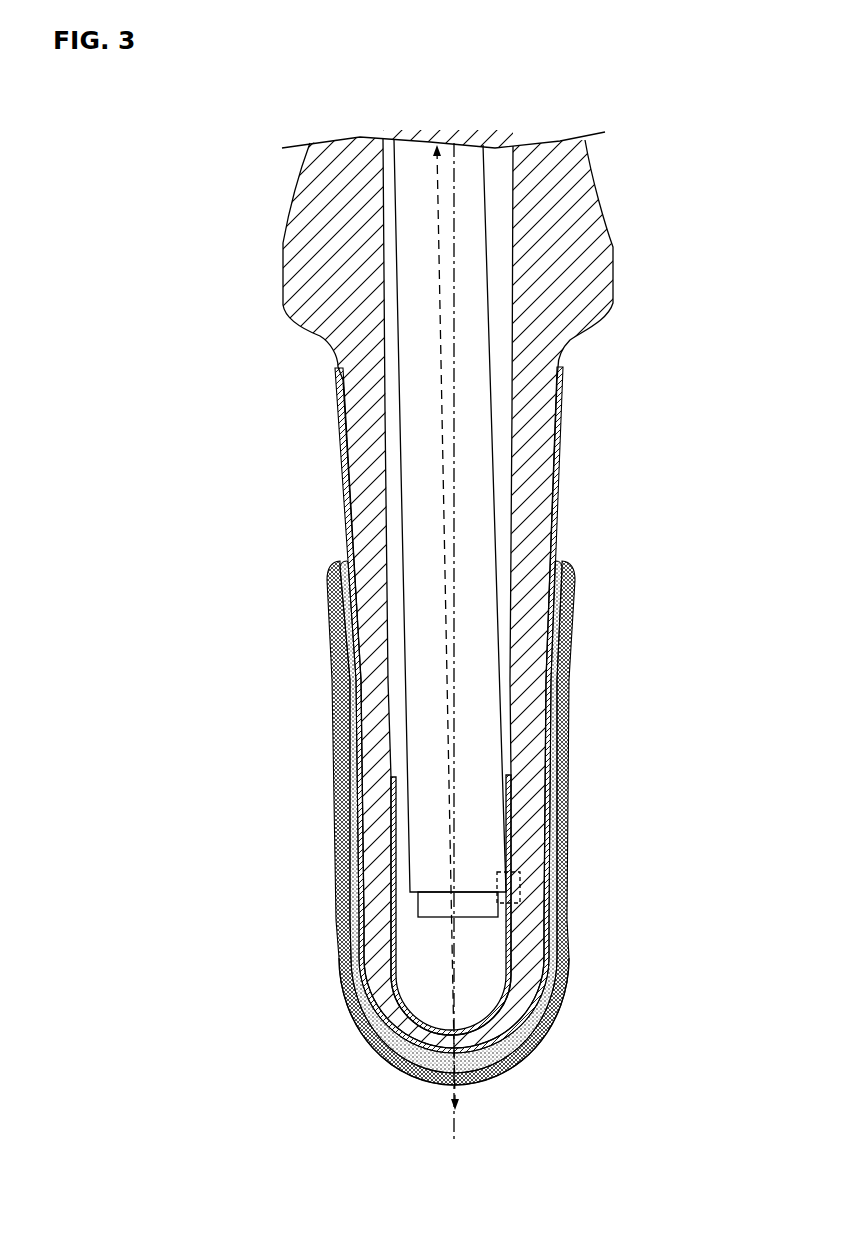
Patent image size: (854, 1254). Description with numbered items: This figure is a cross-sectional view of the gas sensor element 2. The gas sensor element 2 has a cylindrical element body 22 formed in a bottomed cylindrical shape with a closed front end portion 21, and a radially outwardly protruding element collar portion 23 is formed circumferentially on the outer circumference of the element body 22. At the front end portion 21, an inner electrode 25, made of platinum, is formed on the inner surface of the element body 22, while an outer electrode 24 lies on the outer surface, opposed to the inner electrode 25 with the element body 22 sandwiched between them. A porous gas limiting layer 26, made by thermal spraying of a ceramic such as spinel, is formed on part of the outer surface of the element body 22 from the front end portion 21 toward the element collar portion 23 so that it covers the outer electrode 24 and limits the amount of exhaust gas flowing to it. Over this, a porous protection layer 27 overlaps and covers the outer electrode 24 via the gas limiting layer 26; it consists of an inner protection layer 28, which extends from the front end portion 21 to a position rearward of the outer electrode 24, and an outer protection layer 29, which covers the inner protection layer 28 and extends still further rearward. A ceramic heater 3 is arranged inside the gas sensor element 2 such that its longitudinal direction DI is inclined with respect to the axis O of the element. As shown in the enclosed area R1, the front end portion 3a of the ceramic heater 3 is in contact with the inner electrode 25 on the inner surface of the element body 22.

The gas sensor element 2 is at (240, 181).
The element body 22 is at (570, 177).
The element collar portion 23 is at (320, 272).
The outer electrode 24 is at (545, 913).
The inner electrode 25 is at (510, 840).
The gas limiting layer 26 is at (558, 467).
The porous protection layer 27 is at (712, 653).
The inner protection layer 28 is at (554, 768).
The outer protection layer 29 is at (566, 673).
The front end portion 21 is at (420, 1080).
The ceramic heater 3 is at (465, 530).
The front end portion of the ceramic heater 3a is at (470, 885).
The enclosed area R1 is at (520, 887).
The longitudinal direction of the ceramic heater DI is at (440, 396).
The central axis O is at (460, 1115).